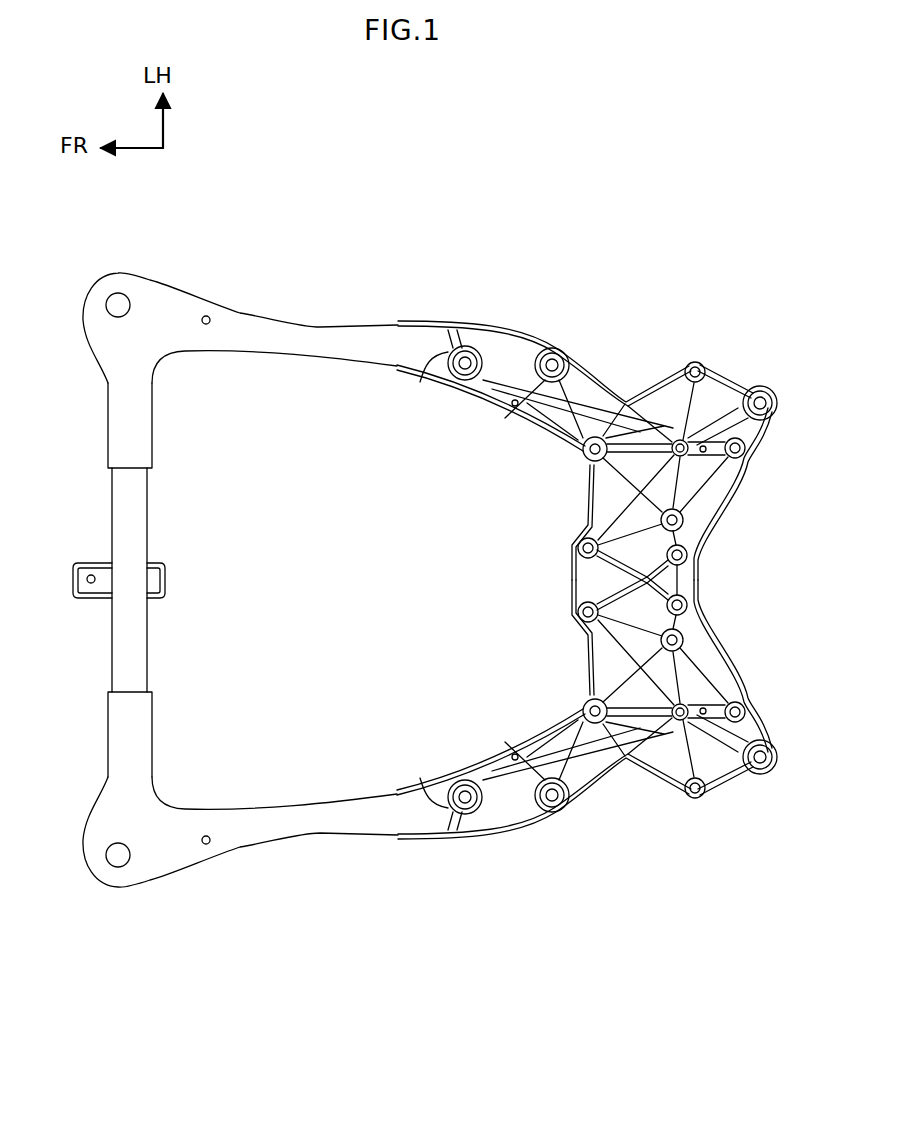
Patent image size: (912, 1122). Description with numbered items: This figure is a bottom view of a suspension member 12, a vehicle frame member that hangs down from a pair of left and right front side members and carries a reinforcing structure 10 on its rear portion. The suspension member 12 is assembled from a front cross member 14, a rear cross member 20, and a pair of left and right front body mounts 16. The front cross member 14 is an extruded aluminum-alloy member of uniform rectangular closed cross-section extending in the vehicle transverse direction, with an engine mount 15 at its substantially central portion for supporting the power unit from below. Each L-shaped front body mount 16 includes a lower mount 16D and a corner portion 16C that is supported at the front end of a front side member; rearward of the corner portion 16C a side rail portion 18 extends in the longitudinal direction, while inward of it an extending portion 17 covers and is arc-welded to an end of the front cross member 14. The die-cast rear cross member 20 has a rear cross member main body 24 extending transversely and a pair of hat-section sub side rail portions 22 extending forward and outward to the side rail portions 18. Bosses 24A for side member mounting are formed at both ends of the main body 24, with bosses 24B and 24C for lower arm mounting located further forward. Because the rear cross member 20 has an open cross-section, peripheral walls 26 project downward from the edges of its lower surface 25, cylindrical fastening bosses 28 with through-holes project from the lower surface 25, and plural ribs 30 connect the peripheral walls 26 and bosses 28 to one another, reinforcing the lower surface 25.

The reinforcing structure 10 is at (642, 420).
The suspension member 12 is at (353, 248).
The front cross member 14 is at (120, 516).
The engine mount 15 is at (88, 600).
The front body mount 16 is at (120, 268).
The corner portion 16C is at (112, 300).
The lower mount 16D is at (137, 442).
The extending portion 17 is at (108, 432).
The side rail portion 18 is at (292, 322).
The rear cross member 20 is at (730, 371).
The sub side rail portion 22 is at (458, 318).
The rear cross member main body 24 is at (700, 578).
The boss for side member mounting 24A is at (769, 393).
The boss for lower arm mounting 24B is at (698, 360).
The boss for lower arm mounting 24C is at (555, 345).
The lower surface 25 is at (590, 578).
The peripheral wall 26 is at (512, 408).
The boss for fastening 28 is at (583, 460).
The rib 30 is at (627, 646).